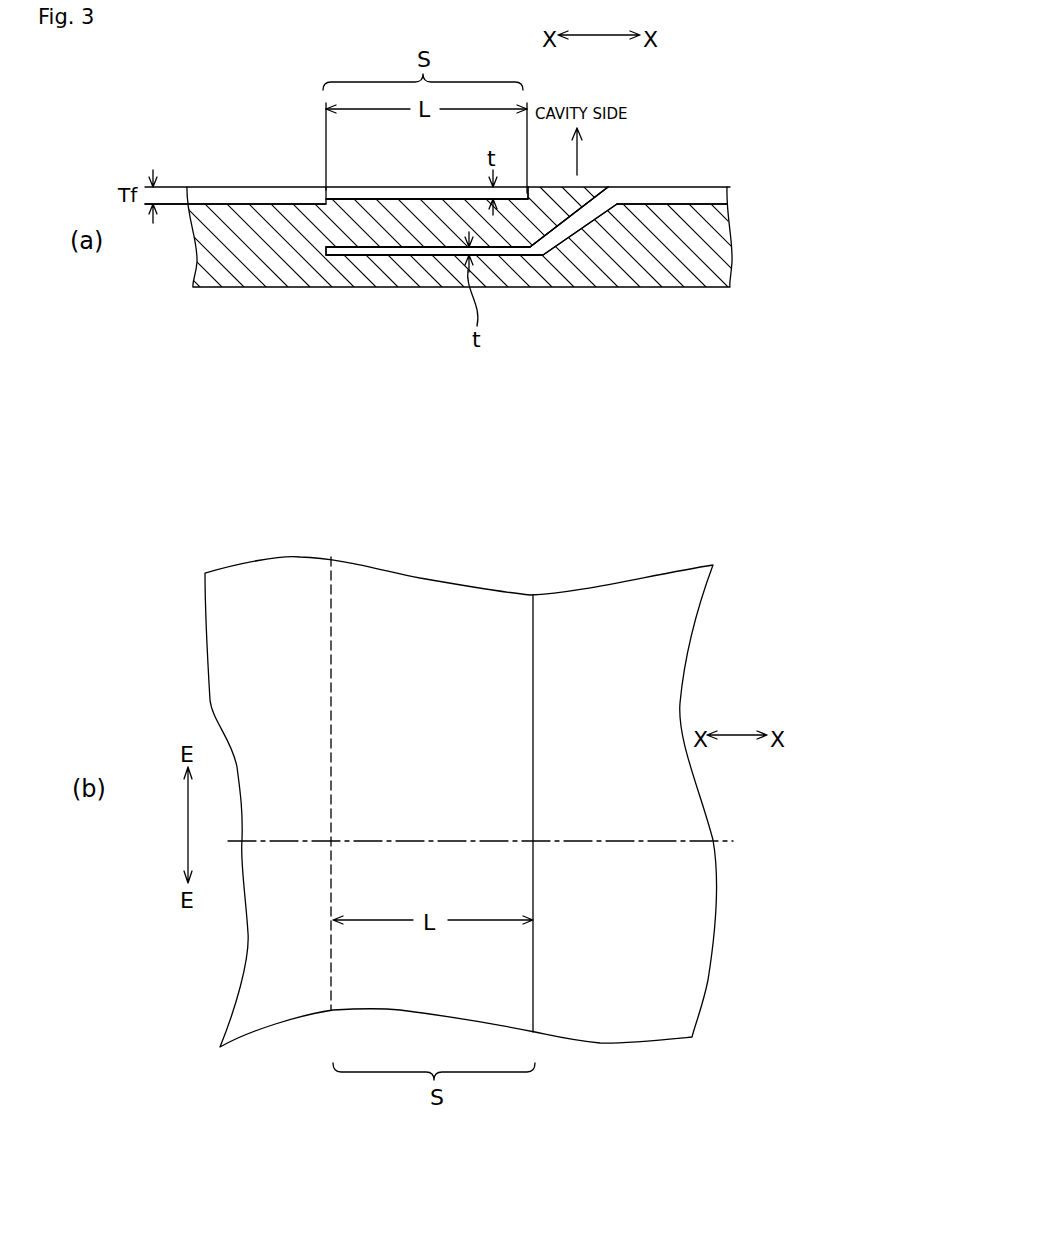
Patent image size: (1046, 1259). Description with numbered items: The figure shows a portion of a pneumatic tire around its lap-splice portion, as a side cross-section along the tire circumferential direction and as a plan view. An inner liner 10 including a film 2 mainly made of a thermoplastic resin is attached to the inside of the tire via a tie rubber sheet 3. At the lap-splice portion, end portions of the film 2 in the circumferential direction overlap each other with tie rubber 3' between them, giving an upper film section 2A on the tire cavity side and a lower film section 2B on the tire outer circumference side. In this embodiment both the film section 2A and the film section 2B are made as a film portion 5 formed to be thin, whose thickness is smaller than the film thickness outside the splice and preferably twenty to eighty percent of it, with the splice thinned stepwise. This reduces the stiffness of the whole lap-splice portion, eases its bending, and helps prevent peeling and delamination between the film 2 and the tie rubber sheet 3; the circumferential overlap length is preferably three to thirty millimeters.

The film 2 is at (228, 197).
The inner liner 10 is at (603, 605).
The film section on tire cavity side 2A is at (368, 188).
The film section on tire outer circumference side 2B is at (348, 253).
The film portion formed to be thin 5 is at (449, 188).
The tie rubber sheet 3 is at (458, 272).
The tie rubber 3' is at (467, 262).